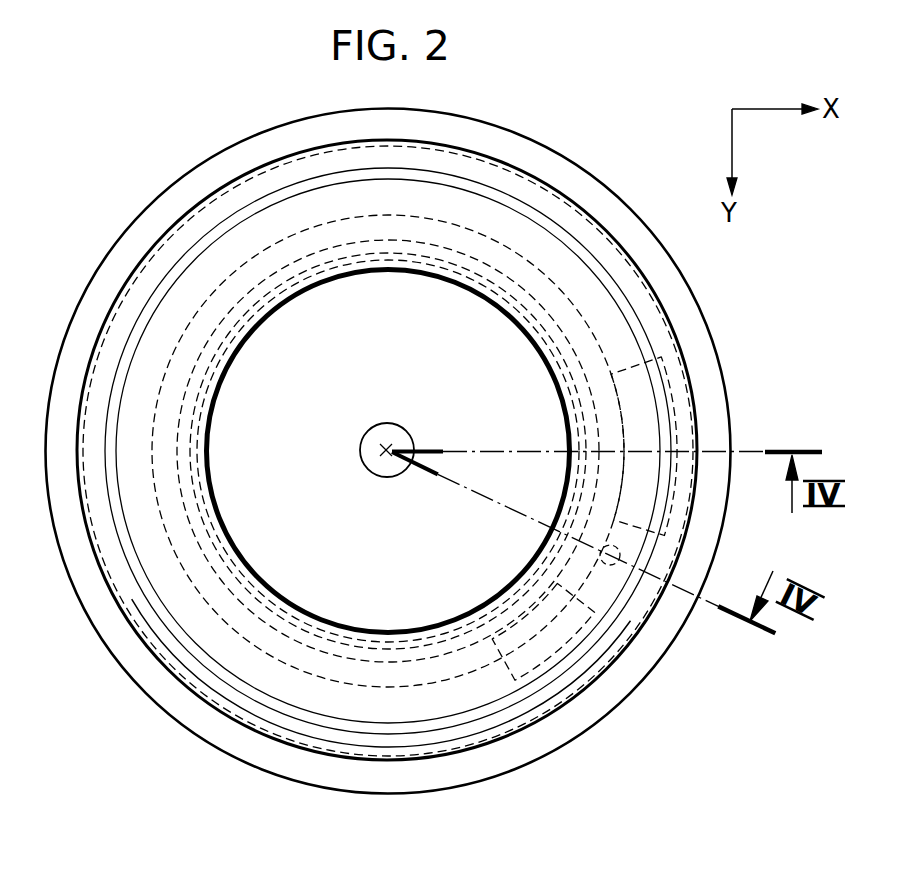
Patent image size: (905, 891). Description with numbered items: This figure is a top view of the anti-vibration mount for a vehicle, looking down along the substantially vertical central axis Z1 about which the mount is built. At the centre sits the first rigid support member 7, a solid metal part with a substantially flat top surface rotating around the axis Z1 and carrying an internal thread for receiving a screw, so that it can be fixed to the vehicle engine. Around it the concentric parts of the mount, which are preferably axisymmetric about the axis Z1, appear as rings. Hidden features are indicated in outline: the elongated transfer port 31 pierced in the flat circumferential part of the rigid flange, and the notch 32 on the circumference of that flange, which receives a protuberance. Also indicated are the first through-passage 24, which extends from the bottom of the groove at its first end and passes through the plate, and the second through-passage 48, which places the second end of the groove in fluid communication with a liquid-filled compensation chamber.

The first rigid support member 7 is at (437, 372).
The central axis Z1 is at (383, 447).
The elongated transfer port 31 is at (683, 390).
The notch 32 is at (640, 582).
The second through-passage 48 is at (577, 610).
The first through-passage 24 is at (555, 652).